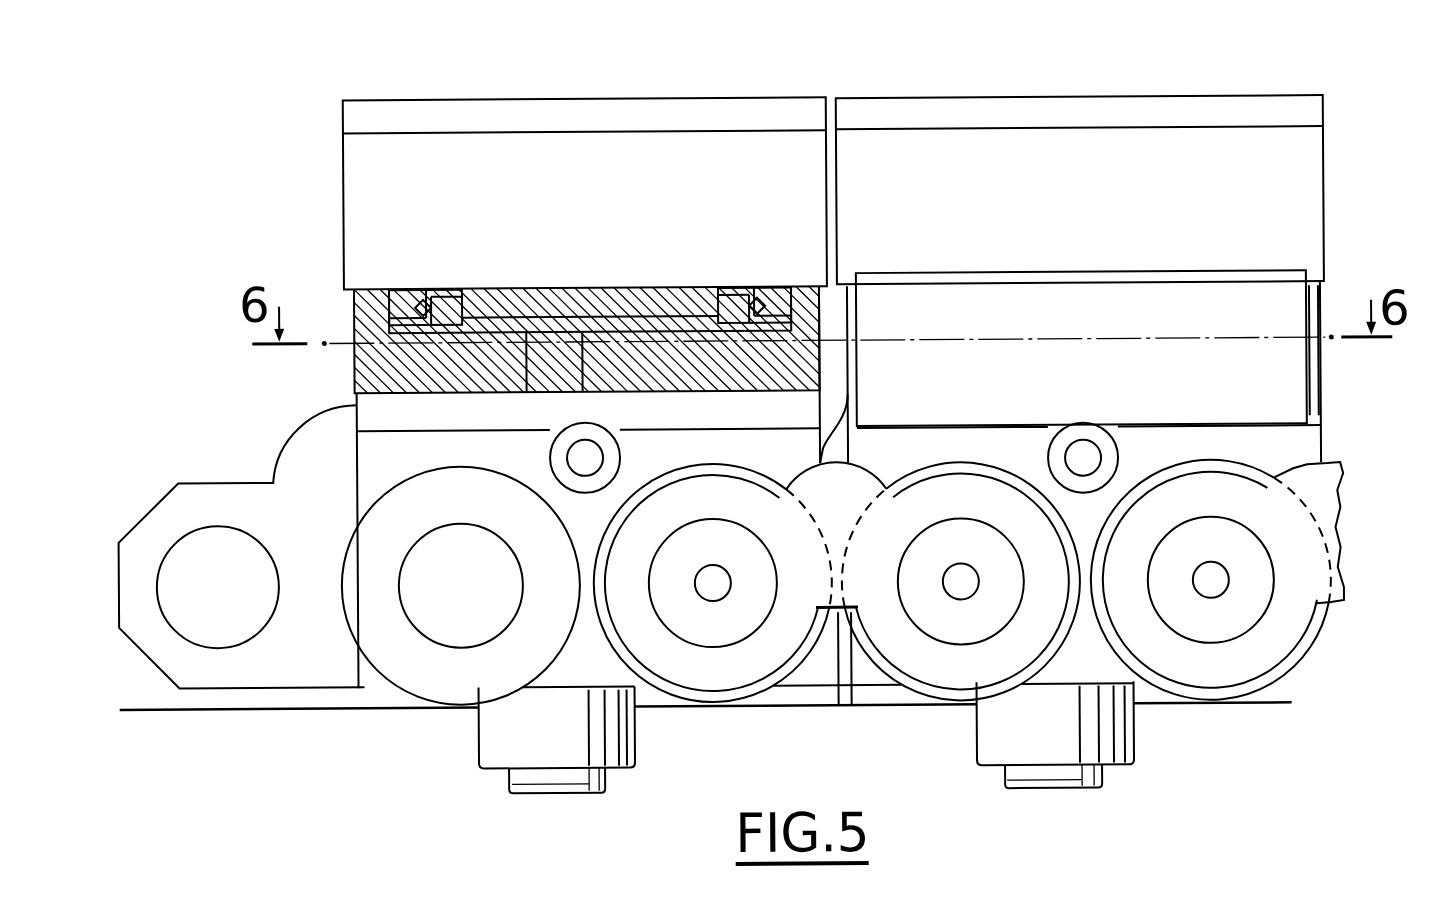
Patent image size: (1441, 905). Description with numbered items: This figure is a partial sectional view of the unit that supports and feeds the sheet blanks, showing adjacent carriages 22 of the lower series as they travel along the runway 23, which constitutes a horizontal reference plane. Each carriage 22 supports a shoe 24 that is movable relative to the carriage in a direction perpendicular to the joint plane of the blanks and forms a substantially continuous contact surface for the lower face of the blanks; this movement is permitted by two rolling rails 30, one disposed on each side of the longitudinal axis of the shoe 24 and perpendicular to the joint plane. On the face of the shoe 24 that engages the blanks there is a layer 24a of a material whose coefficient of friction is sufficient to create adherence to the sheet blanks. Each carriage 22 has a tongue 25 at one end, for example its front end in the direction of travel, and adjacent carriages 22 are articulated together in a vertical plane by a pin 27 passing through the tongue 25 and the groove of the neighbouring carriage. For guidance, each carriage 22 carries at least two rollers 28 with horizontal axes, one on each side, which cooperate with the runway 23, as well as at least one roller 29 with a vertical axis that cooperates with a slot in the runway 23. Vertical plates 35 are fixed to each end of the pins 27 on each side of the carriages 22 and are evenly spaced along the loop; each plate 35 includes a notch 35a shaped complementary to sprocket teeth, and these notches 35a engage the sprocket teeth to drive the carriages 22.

The carriage 22 is at (368, 407).
The runway 23 is at (290, 707).
The shoe 24 is at (358, 155).
The layer 24a is at (615, 115).
The tongue 25 is at (188, 507).
The pin 27 is at (183, 603).
The roller 28 is at (425, 676).
The roller 29 is at (502, 735).
The rolling rail 30 is at (392, 277).
The vertical plate 35 is at (760, 655).
The notch 35a is at (837, 643).